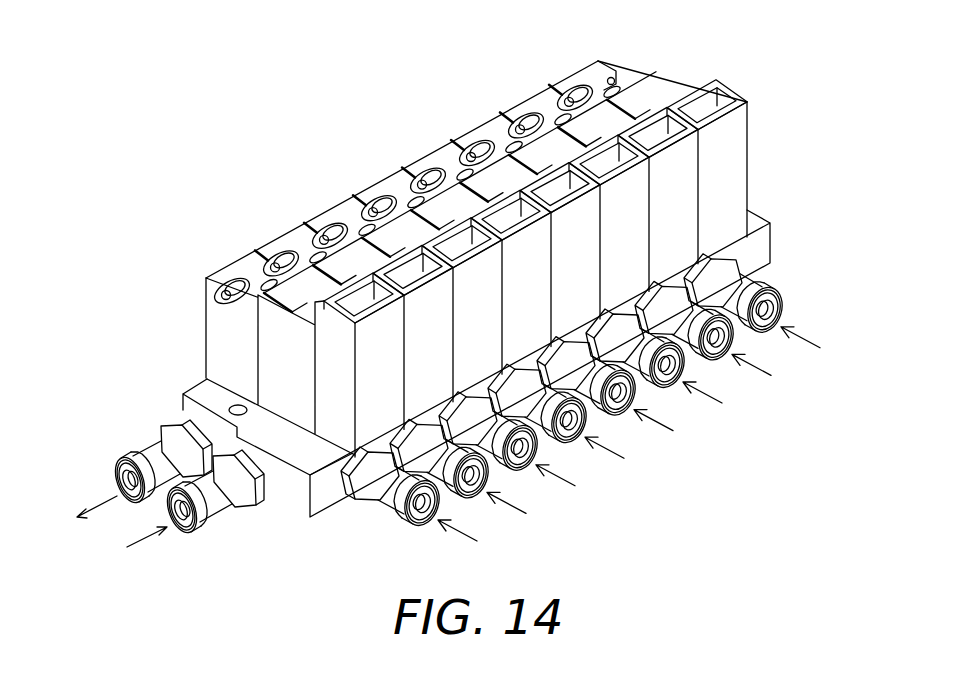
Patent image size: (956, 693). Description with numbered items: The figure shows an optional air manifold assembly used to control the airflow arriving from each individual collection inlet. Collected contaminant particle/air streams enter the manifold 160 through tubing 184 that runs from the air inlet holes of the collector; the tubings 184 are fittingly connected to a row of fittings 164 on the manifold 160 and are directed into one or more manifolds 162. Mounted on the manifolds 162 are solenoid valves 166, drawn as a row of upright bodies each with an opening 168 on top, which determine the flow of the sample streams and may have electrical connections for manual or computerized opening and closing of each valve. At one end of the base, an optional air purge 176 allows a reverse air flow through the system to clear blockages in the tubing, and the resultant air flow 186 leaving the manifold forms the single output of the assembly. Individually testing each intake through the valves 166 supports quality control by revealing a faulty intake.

The manifold 160 is at (376, 143).
The manifold 162 is at (190, 387).
The fitting 164 is at (776, 287).
The solenoid valve 166 is at (663, 78).
The connector opening 168 is at (710, 112).
The air purge 176 is at (138, 550).
The tubing 184 is at (808, 340).
The air flow output 186 is at (107, 495).